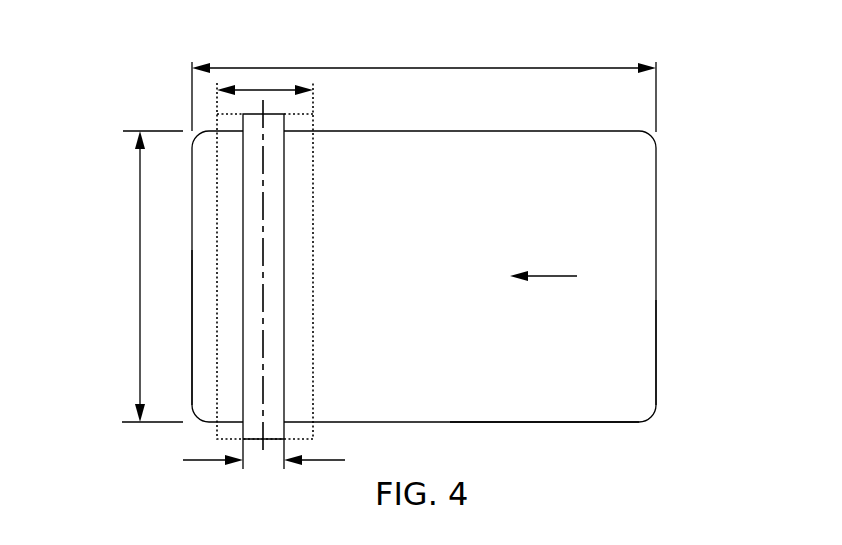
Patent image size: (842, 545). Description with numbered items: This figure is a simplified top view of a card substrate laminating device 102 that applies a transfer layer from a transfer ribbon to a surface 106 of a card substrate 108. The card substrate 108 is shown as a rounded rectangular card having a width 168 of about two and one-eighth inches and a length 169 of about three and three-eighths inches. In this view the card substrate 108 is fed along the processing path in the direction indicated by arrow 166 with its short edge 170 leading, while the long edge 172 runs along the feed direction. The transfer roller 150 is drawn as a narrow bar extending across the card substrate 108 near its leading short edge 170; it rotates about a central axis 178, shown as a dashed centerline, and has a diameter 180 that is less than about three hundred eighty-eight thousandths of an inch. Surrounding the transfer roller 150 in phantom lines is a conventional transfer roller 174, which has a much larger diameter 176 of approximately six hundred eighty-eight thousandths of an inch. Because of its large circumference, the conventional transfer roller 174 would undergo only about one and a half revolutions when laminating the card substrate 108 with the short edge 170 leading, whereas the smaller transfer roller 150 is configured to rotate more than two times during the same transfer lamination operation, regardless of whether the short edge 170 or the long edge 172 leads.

The card substrate laminating device 102 is at (115, 51).
The surface 106 is at (642, 217).
The card substrate 108 is at (633, 348).
The transfer roller 150 is at (278, 262).
The arrow 166 is at (547, 276).
The width 168 is at (140, 250).
The length 169 is at (418, 68).
The short edge 170 is at (193, 337).
The long edge 172 is at (545, 422).
The conventional transfer roller 174 is at (313, 353).
The diameter 176 is at (259, 88).
The central axis 178 is at (265, 183).
The diameter 180 is at (207, 462).